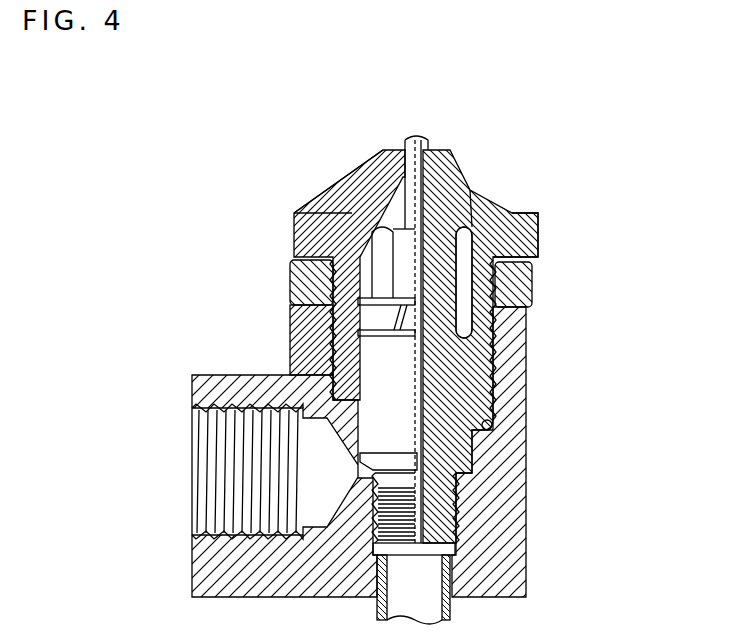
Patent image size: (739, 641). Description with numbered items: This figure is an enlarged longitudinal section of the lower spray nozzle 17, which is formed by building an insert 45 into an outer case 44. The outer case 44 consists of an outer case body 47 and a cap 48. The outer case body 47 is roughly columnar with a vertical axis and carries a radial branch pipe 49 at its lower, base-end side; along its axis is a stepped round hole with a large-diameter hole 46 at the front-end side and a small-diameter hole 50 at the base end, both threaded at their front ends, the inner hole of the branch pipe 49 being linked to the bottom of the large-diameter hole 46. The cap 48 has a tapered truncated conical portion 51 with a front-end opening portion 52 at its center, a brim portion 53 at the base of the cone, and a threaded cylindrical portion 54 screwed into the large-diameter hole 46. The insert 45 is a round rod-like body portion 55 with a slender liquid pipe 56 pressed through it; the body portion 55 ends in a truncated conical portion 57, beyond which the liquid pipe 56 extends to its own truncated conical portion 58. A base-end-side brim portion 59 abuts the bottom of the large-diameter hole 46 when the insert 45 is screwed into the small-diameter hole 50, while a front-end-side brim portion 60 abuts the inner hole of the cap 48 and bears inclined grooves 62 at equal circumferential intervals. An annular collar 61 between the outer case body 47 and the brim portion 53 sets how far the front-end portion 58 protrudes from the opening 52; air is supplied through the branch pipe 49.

The lower spray nozzle 17 is at (574, 206).
The outer case 44 is at (222, 278).
The insert 45 is at (222, 180).
The large-diameter hole 46 is at (491, 428).
The outer case body 47 is at (289, 345).
The cap 48 is at (325, 332).
The branch pipe 49 is at (198, 568).
The small-diameter hole 50 is at (455, 520).
The truncated conical portion 51 is at (455, 203).
The front-end opening portion 52 is at (403, 150).
The brim portion 53 is at (538, 232).
The cylindrical portion 54 is at (483, 363).
The body portion 55 is at (382, 248).
The liquid pipe 56 is at (403, 178).
The truncated conical portion 57 is at (477, 193).
The truncated conical portion 58 is at (427, 138).
The base-end-side brim portion 59 is at (470, 455).
The front-end-side brim portion 60 is at (463, 323).
The annular collar 61 is at (526, 283).
The inclined grooves 62 is at (408, 305).